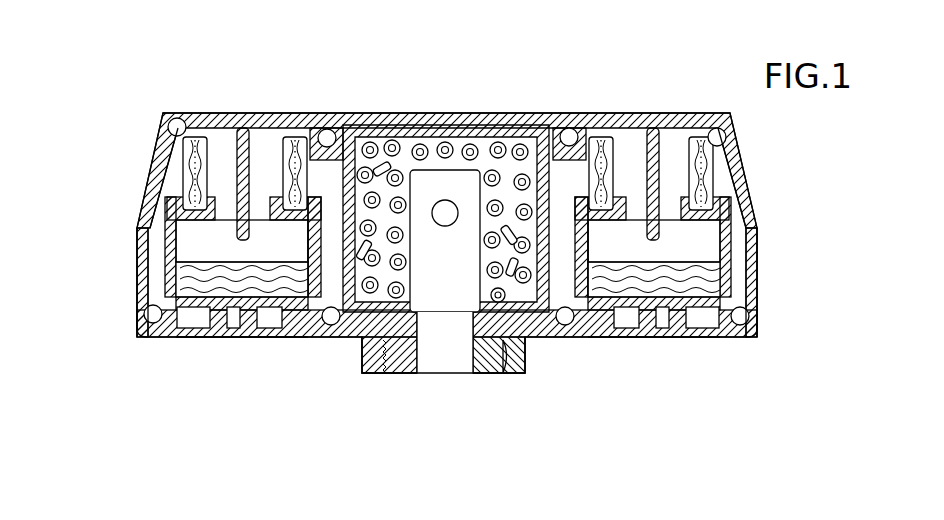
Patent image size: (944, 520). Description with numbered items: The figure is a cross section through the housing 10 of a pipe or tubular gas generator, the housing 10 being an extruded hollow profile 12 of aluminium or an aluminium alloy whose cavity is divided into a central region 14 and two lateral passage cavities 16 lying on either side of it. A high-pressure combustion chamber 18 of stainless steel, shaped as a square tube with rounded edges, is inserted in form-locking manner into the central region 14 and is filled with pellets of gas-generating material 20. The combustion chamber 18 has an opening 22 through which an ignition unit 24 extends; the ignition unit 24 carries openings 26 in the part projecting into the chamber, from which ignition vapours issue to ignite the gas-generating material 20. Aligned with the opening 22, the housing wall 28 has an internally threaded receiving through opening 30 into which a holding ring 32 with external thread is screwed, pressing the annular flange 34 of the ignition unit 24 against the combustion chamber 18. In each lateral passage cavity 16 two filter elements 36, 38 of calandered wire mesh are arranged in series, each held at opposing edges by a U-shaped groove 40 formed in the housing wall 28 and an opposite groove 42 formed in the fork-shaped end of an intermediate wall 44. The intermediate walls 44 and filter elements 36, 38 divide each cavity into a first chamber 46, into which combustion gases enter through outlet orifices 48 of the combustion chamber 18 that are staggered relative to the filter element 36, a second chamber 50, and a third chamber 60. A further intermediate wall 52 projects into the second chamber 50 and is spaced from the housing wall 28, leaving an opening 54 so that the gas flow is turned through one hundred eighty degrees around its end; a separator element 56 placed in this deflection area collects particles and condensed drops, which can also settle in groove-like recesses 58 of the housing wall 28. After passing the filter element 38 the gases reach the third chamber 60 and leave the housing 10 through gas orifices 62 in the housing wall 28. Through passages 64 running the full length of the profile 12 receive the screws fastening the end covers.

The housing 10 is at (542, 92).
The extruded hollow profile 12 is at (615, 117).
The central region 14 is at (433, 115).
The lateral passage cavities 16 is at (173, 227).
The high-pressure combustion chamber 18 is at (468, 118).
The gas-generating material 20 is at (487, 277).
The opening 22 is at (433, 330).
The ignition unit 24 is at (412, 392).
The openings 26 is at (441, 222).
The housing wall 28 is at (350, 337).
The receiving through opening 30 is at (517, 377).
The holding ring 32 is at (402, 352).
The annular flange 34 is at (473, 375).
The first filter element 36 is at (285, 113).
The second filter element 38 is at (178, 152).
The grooves 40 is at (310, 113).
The groove 42 is at (650, 400).
The intermediate walls 44 is at (297, 337).
The first chamber 46 is at (358, 113).
The outlet orifices 48 is at (323, 330).
The second chamber 50 is at (247, 330).
The further intermediate wall 52 is at (177, 165).
The opening 54 is at (143, 250).
The separator element 56 is at (170, 300).
The recesses 58 is at (215, 338).
The third chamber 60 is at (160, 198).
The gas orifices 62 is at (137, 262).
The through passages 64 is at (177, 118).